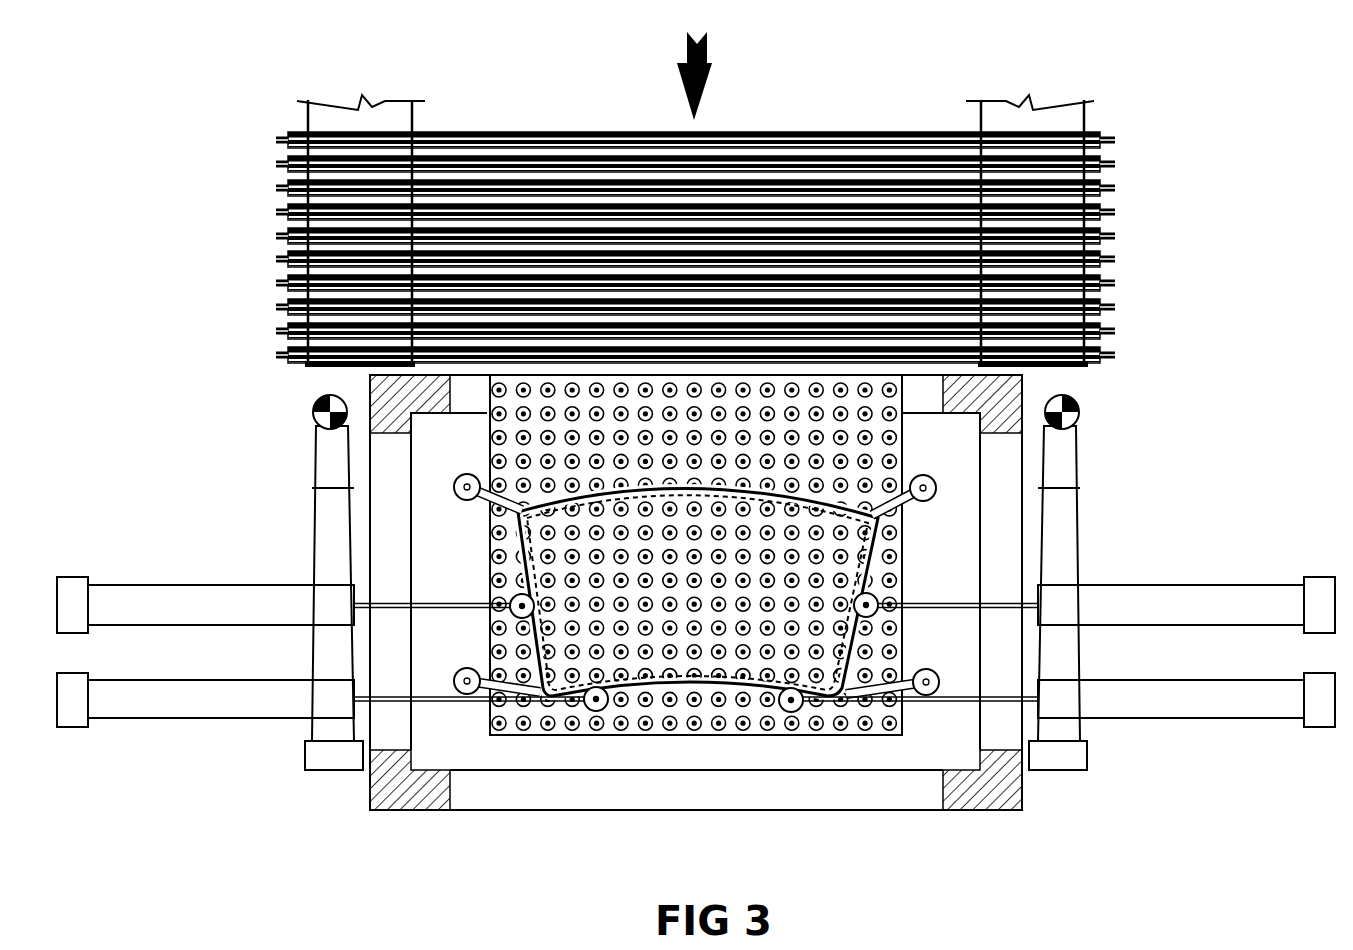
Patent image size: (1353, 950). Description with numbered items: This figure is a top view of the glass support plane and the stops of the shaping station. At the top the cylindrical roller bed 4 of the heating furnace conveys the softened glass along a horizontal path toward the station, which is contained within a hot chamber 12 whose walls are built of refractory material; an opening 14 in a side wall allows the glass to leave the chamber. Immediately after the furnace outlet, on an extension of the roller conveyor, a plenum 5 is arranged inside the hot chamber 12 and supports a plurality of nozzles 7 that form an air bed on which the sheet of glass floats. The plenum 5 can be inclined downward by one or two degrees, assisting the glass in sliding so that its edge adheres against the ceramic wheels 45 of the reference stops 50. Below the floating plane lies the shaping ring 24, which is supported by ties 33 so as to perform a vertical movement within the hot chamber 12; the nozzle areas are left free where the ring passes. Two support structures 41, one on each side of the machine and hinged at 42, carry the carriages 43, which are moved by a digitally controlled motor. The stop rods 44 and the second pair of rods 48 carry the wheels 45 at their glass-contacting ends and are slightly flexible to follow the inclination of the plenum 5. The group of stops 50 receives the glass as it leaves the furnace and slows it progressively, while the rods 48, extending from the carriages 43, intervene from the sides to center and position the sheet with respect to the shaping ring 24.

The cylindrical roller bed 4 is at (1118, 188).
The plenum 5 is at (896, 455).
The nozzles 7 is at (505, 732).
The hot chamber 12 is at (1026, 798).
The opening 14 is at (912, 770).
The shaping ring 24 is at (872, 532).
The ties 33 is at (456, 480).
The support structures 41 is at (322, 500).
The hinge 42 is at (316, 406).
The carriages 43 is at (74, 600).
The stop rods 44 is at (448, 700).
The ceramic wheels 45 is at (590, 712).
The second pair of rods 48 is at (440, 600).
The reference stops 50 is at (208, 608).